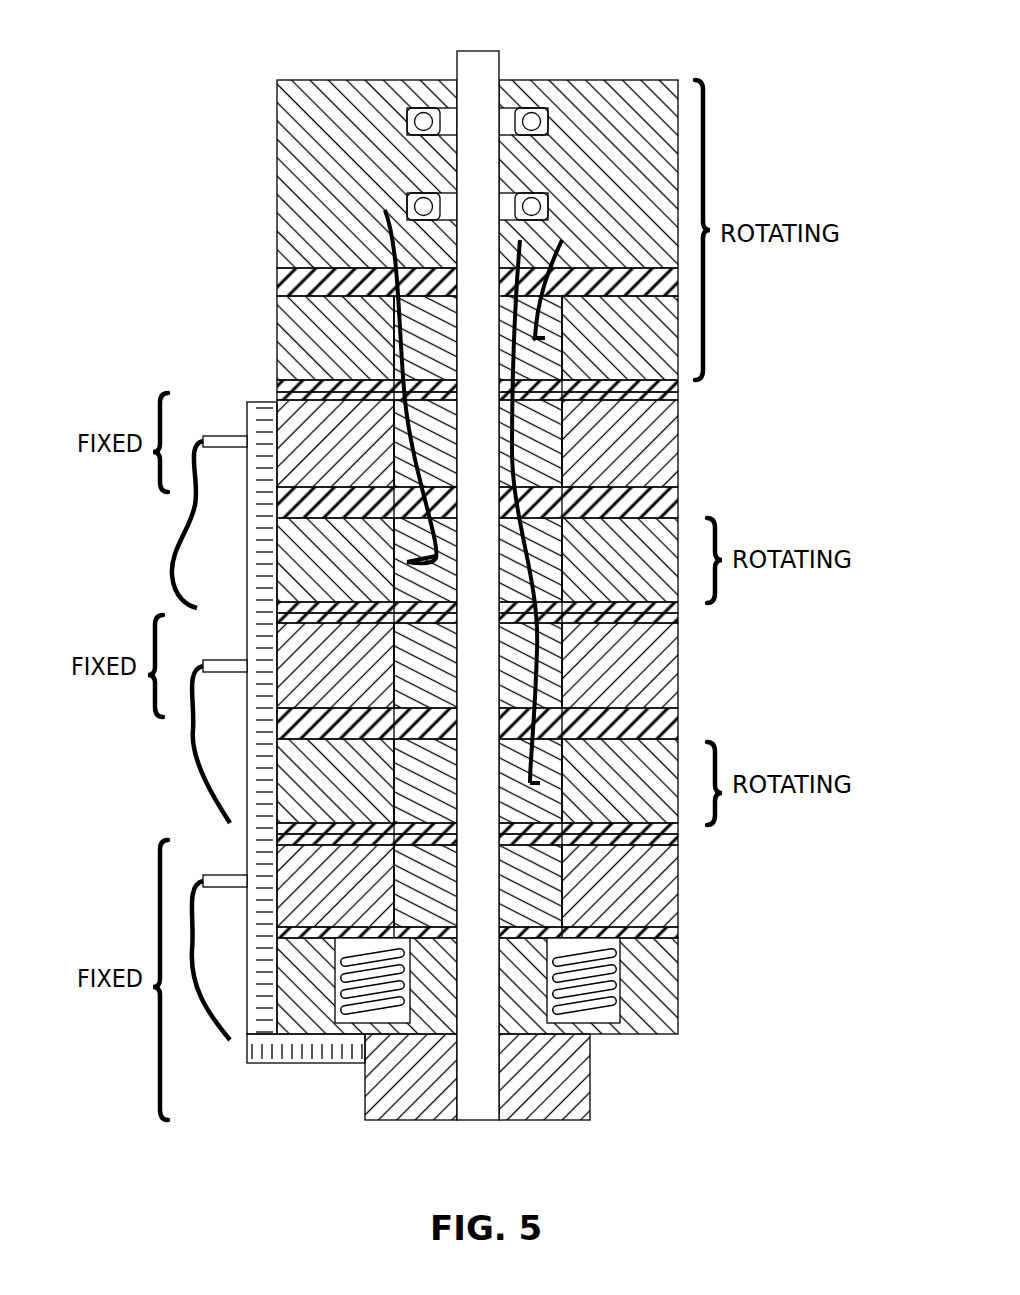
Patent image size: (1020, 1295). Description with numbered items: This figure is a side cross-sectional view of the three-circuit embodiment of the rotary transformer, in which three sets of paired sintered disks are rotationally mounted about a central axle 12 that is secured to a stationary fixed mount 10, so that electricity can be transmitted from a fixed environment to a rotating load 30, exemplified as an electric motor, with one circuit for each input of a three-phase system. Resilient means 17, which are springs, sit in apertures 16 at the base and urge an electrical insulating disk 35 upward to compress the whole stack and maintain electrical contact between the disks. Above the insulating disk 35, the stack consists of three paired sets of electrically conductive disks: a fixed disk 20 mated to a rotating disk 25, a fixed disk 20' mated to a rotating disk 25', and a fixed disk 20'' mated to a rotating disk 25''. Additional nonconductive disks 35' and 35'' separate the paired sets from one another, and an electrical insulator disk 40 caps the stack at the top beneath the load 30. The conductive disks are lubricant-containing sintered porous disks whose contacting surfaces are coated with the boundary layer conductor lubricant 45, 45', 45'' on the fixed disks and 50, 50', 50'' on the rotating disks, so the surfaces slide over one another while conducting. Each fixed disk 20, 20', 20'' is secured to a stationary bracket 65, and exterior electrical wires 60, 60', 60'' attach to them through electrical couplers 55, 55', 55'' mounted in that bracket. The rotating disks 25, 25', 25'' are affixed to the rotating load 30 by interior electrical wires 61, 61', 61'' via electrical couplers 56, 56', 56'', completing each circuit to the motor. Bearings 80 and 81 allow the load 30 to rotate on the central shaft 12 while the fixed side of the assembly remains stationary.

The fixed mount 10 is at (590, 1080).
The central axle 12 is at (477, 51).
The apertures 16 is at (678, 978).
The resilient means 17 is at (590, 1000).
The fixed electrically conductive disk 20 is at (521, 886).
The fixed electrically conductive disk 20' is at (518, 668).
The fixed electrically conductive disk 20'' is at (529, 443).
The rotating electrically conductive disk 25 is at (531, 776).
The rotating electrically conductive disk 25' is at (528, 552).
The rotating electrically conductive disk 25'' is at (540, 338).
The load 30 is at (340, 80).
The electrical insulating disk 35 is at (523, 938).
The nonconductive disk 35' is at (554, 718).
The nonconductive disk 35'' is at (531, 495).
The electrical insulator disk 40 is at (277, 283).
The BLC/lubricant 45 is at (529, 860).
The BLC/lubricant 45' is at (524, 642).
The BLC/lubricant 45'' is at (533, 409).
The BLC/lubricant 50 is at (537, 838).
The BLC/lubricant 50' is at (536, 607).
The BLC/lubricant 50'' is at (546, 376).
The first coupler 55 is at (177, 862).
The electrical coupler 55' is at (206, 644).
The electrical coupler 55'' is at (193, 401).
The second coupler 56 is at (502, 808).
The electrical coupler 56' is at (457, 598).
The electrical coupler 56'' is at (505, 372).
The electrical lead 60 is at (209, 983).
The exterior electrical wire 60' is at (168, 744).
The exterior electrical wire 60'' is at (140, 524).
The interior wire 61 is at (499, 511).
The electrical wire 61' is at (444, 386).
The electrical wire 61'' is at (512, 262).
The stationary bracket 65 is at (247, 847).
The bearing 80 is at (527, 108).
The bearing 81 is at (500, 176).